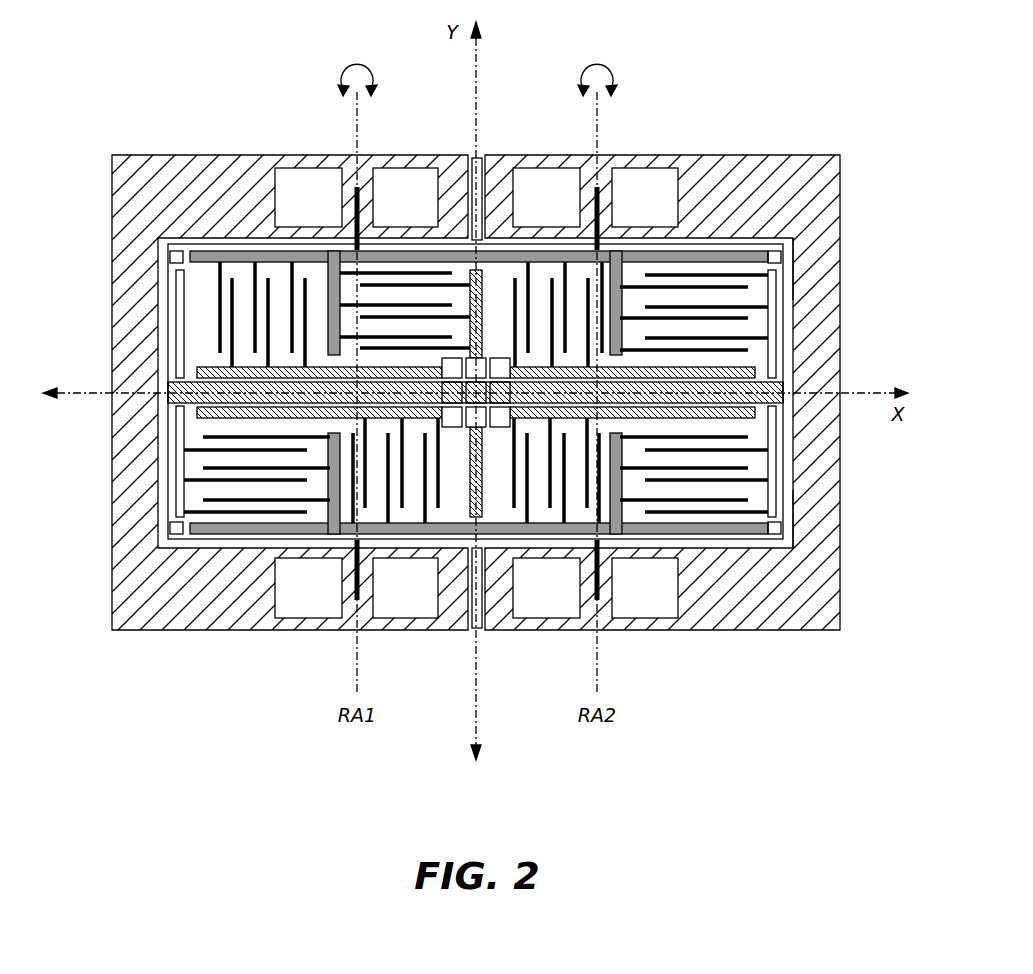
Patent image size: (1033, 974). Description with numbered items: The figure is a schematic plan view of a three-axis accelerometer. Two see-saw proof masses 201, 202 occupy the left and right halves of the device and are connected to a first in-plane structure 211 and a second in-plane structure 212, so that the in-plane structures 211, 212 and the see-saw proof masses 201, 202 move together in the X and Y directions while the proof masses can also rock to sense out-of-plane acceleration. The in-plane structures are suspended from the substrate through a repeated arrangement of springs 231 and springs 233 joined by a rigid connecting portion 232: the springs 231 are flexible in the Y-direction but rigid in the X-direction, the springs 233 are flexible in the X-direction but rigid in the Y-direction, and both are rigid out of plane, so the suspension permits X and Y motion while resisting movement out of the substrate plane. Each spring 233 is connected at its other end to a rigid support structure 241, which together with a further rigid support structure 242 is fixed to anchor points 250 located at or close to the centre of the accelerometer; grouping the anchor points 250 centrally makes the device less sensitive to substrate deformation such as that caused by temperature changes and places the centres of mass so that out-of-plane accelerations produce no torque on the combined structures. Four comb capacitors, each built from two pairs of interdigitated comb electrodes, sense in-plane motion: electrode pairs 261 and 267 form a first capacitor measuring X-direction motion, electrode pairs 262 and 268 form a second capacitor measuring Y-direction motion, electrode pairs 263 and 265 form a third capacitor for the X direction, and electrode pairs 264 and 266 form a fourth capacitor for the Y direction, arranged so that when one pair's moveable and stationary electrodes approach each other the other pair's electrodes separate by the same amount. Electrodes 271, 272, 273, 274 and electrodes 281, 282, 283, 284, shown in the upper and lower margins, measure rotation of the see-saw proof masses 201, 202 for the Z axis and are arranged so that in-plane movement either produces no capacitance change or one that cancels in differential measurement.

The see-saw proof mass 201 is at (283, 157).
The see-saw proof mass 202 is at (684, 157).
The first in-plane structure 211 is at (816, 249).
The second in-plane structure 212 is at (780, 520).
The spring 231 is at (747, 247).
The rigid connecting portion 232 is at (800, 240).
The spring 233 is at (788, 383).
The rigid support structure 241 is at (785, 396).
The rigid support structure 242 is at (166, 400).
The anchor point 250 is at (484, 404).
The electrode pair 261 is at (236, 270).
The electrode pair 262 is at (428, 268).
The electrode pair 263 is at (545, 270).
The electrode pair 264 is at (652, 270).
The electrode pair 265 is at (704, 522).
The electrode pair 266 is at (557, 518).
The electrode pair 267 is at (400, 520).
The electrode pair 268 is at (250, 518).
The electrode 271 is at (308, 197).
The electrode 272 is at (405, 197).
The electrode 273 is at (308, 588).
The electrode 274 is at (405, 588).
The electrode 281 is at (546, 197).
The electrode 282 is at (645, 197).
The electrode 283 is at (546, 588).
The electrode 284 is at (645, 588).